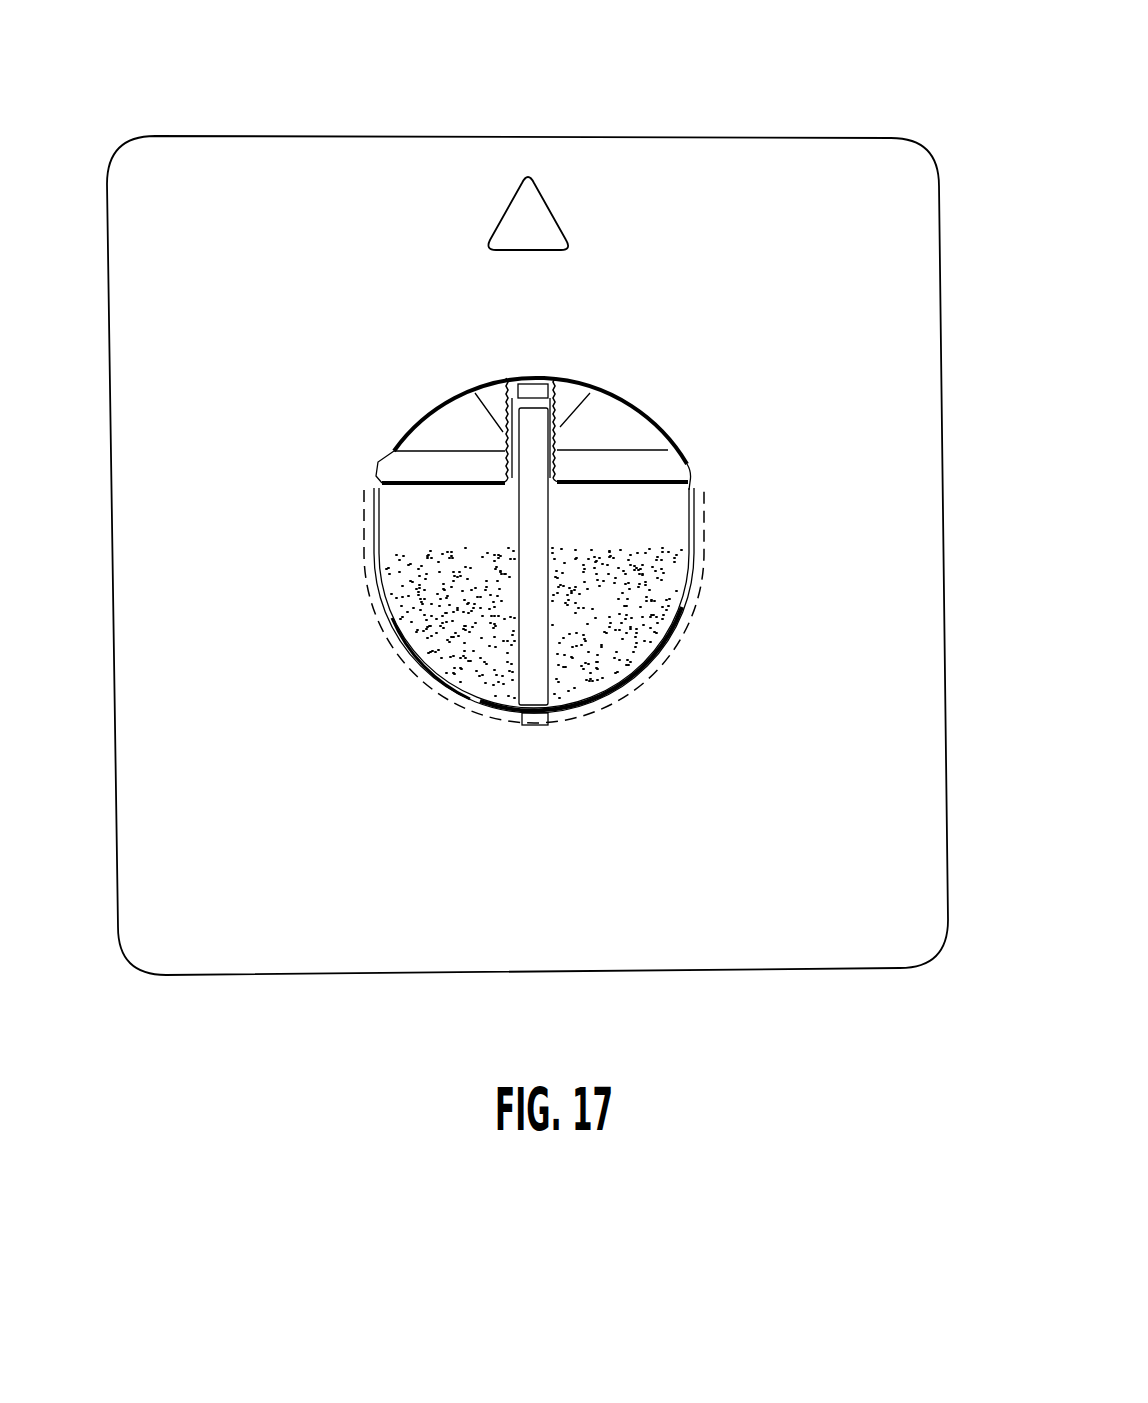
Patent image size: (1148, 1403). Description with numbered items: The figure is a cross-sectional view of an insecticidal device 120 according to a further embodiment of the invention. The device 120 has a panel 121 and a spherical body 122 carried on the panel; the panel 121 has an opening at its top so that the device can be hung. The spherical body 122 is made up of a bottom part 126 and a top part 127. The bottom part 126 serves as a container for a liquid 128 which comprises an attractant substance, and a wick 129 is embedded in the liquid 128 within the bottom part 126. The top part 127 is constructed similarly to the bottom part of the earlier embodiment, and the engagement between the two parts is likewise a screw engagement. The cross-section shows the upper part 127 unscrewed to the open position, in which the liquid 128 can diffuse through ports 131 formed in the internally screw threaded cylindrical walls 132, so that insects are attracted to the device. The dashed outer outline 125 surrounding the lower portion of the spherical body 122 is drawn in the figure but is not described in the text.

The device 120 is at (726, 117).
The panel 121 is at (278, 166).
The spherical body 122 is at (528, 192).
The outer shell 125 is at (692, 615).
The bottom part 126 is at (673, 505).
The top part 127 is at (633, 412).
The liquid 128 is at (650, 580).
The wick 129 is at (530, 463).
The ports 131 is at (503, 432).
The internally screw threaded cylindrical walls 132 is at (556, 405).